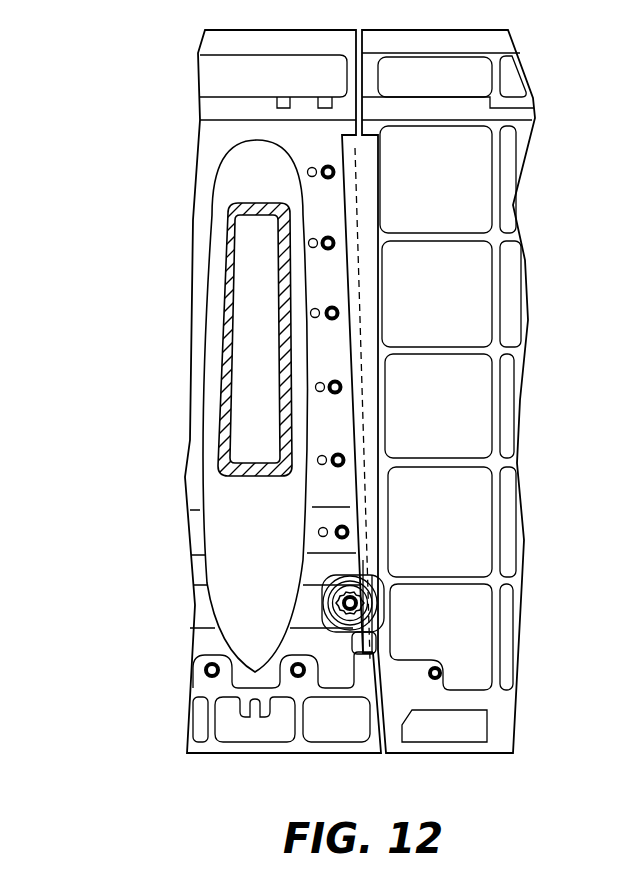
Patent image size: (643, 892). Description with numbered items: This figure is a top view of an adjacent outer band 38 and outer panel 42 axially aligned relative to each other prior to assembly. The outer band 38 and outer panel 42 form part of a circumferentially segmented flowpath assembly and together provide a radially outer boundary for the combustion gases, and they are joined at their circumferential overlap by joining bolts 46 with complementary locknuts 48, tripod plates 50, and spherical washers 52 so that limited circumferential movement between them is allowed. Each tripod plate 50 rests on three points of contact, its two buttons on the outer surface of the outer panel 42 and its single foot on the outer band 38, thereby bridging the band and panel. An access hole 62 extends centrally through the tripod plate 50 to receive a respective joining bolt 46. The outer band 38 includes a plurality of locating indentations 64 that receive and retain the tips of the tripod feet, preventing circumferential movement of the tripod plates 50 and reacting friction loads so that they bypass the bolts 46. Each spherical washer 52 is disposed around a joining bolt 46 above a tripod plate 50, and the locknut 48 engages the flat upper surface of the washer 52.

The outer band 38 is at (197, 194).
The outer panel 42 is at (521, 270).
The joining bolt 46 is at (352, 531).
The locknut 48 is at (368, 603).
The tripod plate 50 is at (378, 552).
The spherical washer 52 is at (355, 645).
The access hole 62 is at (222, 331).
The locating indentation 64 is at (330, 424).